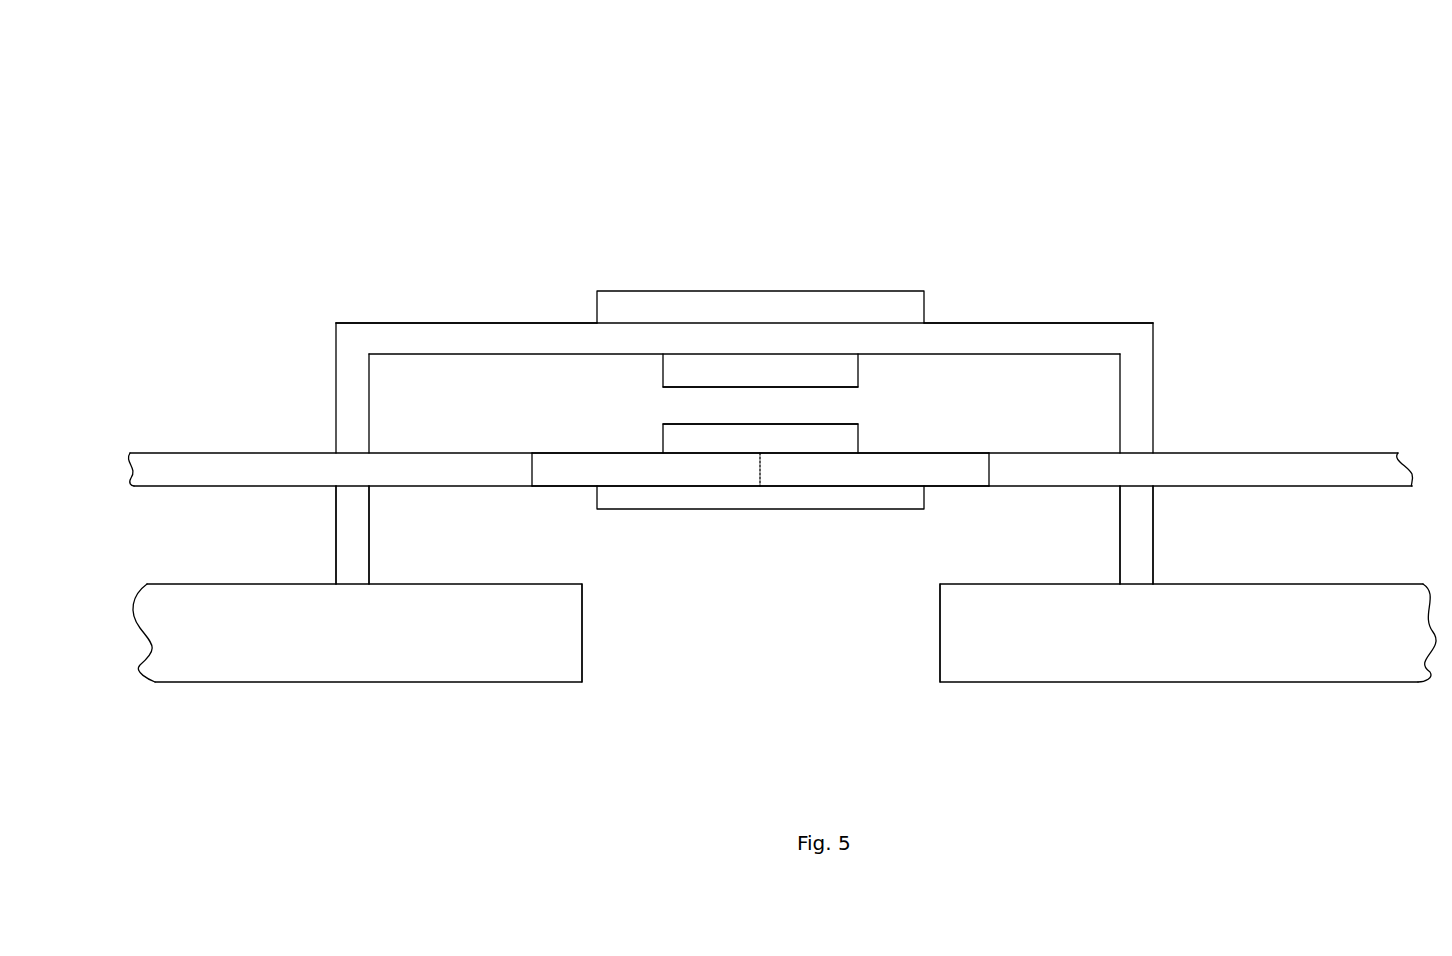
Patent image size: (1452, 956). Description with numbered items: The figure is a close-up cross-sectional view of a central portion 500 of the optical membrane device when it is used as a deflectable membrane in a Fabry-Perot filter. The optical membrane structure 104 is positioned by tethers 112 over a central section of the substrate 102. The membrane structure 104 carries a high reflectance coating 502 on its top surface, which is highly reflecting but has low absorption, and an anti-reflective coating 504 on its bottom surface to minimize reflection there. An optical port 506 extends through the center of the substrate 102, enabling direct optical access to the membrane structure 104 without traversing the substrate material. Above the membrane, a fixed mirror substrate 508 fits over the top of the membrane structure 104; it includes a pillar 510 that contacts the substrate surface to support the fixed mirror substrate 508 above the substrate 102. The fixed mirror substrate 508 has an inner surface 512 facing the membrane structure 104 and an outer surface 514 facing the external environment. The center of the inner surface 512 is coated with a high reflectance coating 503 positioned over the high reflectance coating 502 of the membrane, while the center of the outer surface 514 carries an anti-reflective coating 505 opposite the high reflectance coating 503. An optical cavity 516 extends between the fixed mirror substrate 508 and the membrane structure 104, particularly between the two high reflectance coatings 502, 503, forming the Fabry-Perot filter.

The central portion 500 is at (1242, 93).
The tethers 112 is at (271, 470).
The optical membrane structure 104 is at (730, 467).
The fixed mirror substrate 508 is at (402, 340).
The outer surface 514 is at (565, 322).
The pillar 510 is at (350, 546).
The inner surface 512 is at (1054, 355).
The anti-reflective coating 505 is at (717, 310).
The anti-reflective coating 504 is at (783, 496).
The high reflectance coating 503 is at (828, 368).
The high reflectance coating 502 is at (836, 436).
The optical cavity 516 is at (672, 399).
The optical port 506 is at (782, 690).
The substrate 102 is at (987, 645).